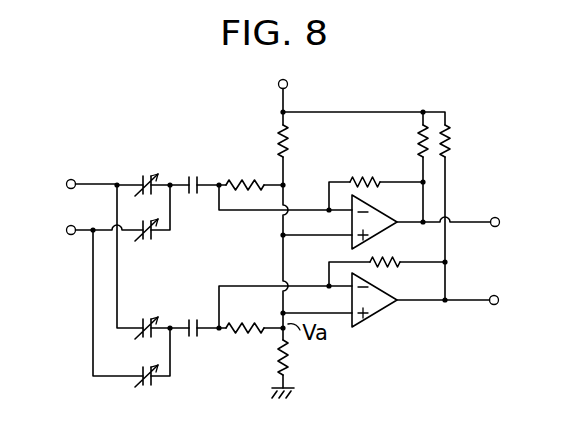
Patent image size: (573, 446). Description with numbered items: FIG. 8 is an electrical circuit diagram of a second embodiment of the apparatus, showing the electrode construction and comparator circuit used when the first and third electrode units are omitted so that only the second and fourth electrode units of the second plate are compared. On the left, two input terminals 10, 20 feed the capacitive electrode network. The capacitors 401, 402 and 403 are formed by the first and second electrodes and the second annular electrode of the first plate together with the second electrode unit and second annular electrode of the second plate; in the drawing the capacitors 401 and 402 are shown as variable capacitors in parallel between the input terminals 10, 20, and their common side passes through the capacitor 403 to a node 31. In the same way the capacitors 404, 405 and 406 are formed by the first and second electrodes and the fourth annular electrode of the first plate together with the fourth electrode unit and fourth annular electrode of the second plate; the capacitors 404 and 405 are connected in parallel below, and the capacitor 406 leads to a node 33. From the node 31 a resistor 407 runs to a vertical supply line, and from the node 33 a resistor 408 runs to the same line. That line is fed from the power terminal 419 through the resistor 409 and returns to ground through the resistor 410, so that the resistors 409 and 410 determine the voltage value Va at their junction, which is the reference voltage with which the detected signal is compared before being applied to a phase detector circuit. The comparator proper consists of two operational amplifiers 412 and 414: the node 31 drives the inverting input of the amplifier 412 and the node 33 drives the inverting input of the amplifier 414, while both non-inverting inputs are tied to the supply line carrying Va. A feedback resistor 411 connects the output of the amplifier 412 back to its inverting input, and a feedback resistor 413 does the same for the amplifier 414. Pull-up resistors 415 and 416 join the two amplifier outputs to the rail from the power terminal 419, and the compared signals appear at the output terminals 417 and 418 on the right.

The input terminal 10 is at (67, 182).
The input terminal 20 is at (69, 234).
The node 31 is at (223, 179).
The node 33 is at (224, 339).
The capacitor 401 is at (142, 175).
The capacitor 402 is at (145, 241).
The capacitor 403 is at (192, 173).
The capacitor 404 is at (142, 318).
The capacitor 405 is at (151, 387).
The capacitor 406 is at (192, 338).
The resistor 407 is at (247, 180).
The resistor 408 is at (244, 334).
The resistor 409 is at (281, 136).
The resistor 410 is at (292, 350).
The feedback resistor 411 is at (362, 178).
The operational amplifier 412 is at (381, 233).
The feedback resistor 413 is at (386, 267).
The operational amplifier 414 is at (381, 314).
The resistor 415 is at (418, 141).
The resistor 416 is at (450, 148).
The output terminal 417 is at (500, 222).
The output terminal 418 is at (499, 300).
The power terminal 419 is at (279, 84).